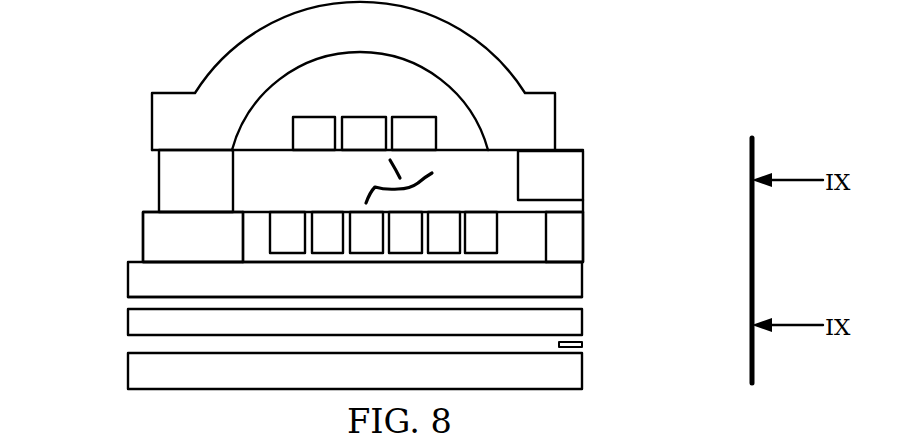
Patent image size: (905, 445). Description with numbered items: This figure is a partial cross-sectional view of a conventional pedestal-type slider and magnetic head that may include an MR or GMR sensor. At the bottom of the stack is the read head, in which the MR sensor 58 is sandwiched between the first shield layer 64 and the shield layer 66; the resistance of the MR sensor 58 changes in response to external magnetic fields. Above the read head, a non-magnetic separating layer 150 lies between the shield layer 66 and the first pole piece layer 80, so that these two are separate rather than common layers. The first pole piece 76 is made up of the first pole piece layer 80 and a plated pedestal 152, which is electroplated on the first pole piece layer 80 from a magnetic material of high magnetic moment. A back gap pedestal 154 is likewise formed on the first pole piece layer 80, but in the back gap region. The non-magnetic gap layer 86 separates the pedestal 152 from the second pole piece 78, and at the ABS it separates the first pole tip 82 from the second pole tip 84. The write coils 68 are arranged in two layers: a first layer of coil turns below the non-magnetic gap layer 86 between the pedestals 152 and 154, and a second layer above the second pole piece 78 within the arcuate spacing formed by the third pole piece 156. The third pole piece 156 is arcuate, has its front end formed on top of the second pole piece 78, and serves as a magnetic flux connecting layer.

The third pole piece 156 is at (493, 47).
The second pole piece 78 is at (573, 148).
The second pole tip 84 is at (583, 167).
The non-magnetic gap layer 86 is at (600, 202).
The first pole tip 82 is at (583, 226).
The plated pedestal 152 is at (572, 238).
The back gap pedestal 154 is at (143, 232).
The first pole piece layer 80 is at (568, 284).
The first pole piece 76 is at (652, 264).
The non-magnetic separating layer 150 is at (598, 300).
The second shield layer 66 is at (577, 325).
The MR sensor 58 is at (582, 345).
The first shield layer 64 is at (583, 370).
The write coil 68 is at (380, 160).